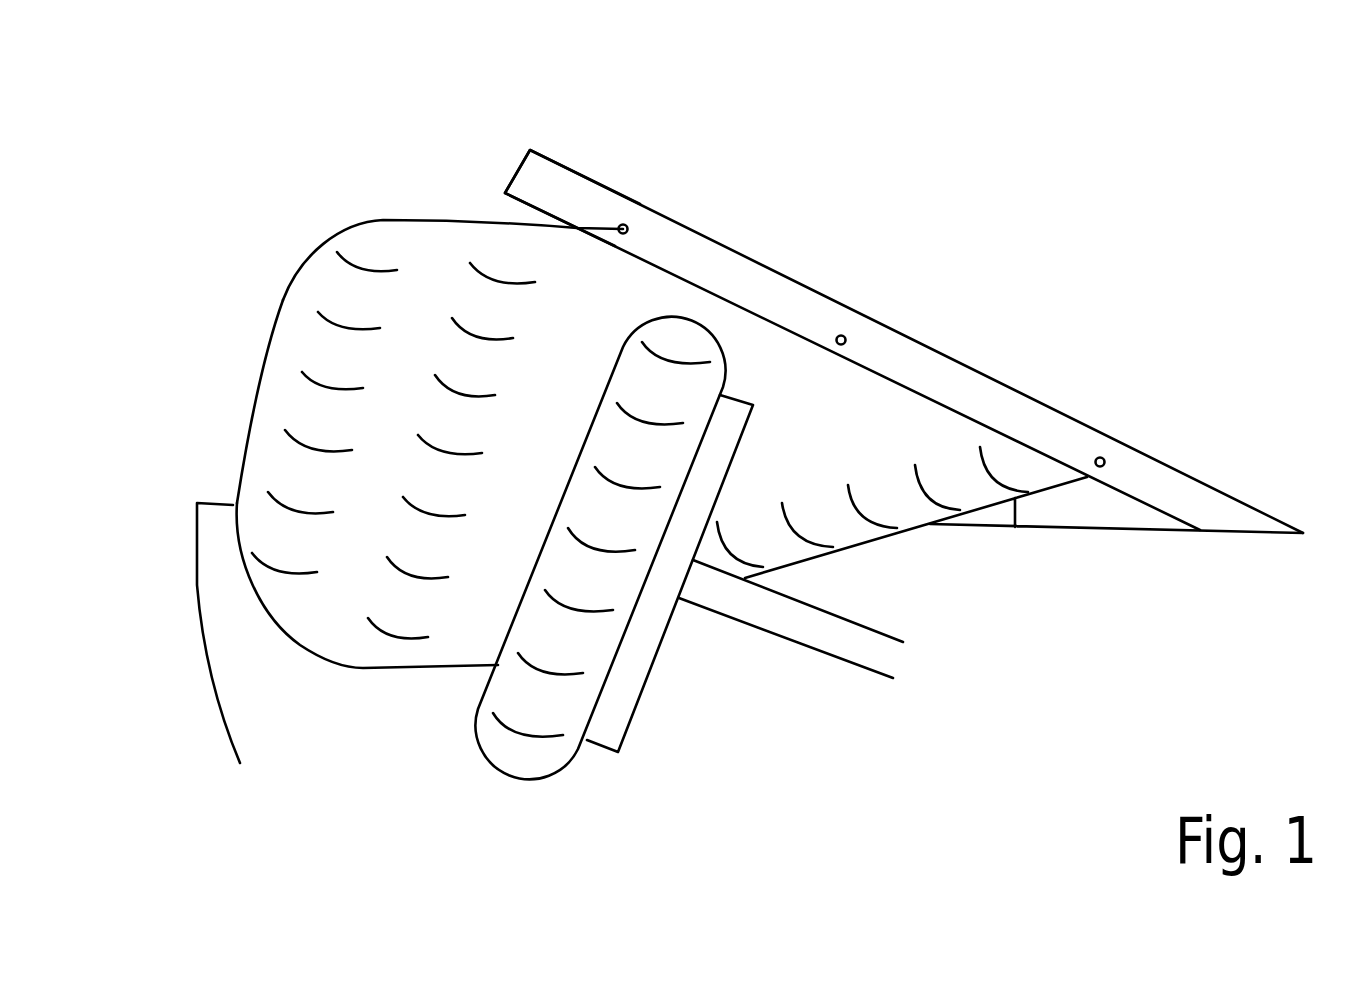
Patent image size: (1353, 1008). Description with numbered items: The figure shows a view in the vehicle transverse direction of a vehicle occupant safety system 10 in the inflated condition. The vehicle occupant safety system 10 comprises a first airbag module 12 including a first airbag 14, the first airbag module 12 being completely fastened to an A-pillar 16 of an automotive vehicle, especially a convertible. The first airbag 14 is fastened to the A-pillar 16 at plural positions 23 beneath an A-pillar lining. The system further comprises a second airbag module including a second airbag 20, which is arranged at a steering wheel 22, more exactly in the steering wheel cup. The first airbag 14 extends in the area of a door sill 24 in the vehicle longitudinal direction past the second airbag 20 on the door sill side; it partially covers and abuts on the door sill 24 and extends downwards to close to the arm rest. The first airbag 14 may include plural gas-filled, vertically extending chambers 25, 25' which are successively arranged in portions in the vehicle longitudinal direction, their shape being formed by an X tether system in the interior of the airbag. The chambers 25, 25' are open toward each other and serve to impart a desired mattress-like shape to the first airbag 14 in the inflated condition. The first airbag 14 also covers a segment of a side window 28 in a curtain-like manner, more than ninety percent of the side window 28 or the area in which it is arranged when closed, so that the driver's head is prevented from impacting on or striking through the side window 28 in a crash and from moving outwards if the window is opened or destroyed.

The vehicle occupant safety system 10 is at (904, 580).
The first airbag module 12 is at (930, 402).
The first airbag 14 is at (402, 373).
The A-pillar 16 is at (557, 188).
The second airbag 20 is at (530, 628).
The steering wheel 22 is at (659, 603).
The positions 23 is at (623, 229).
The door sill 24 is at (222, 517).
The gas-filled chamber 25 is at (315, 337).
The gas-filled chamber 25' is at (441, 307).
The side window 28 is at (232, 400).